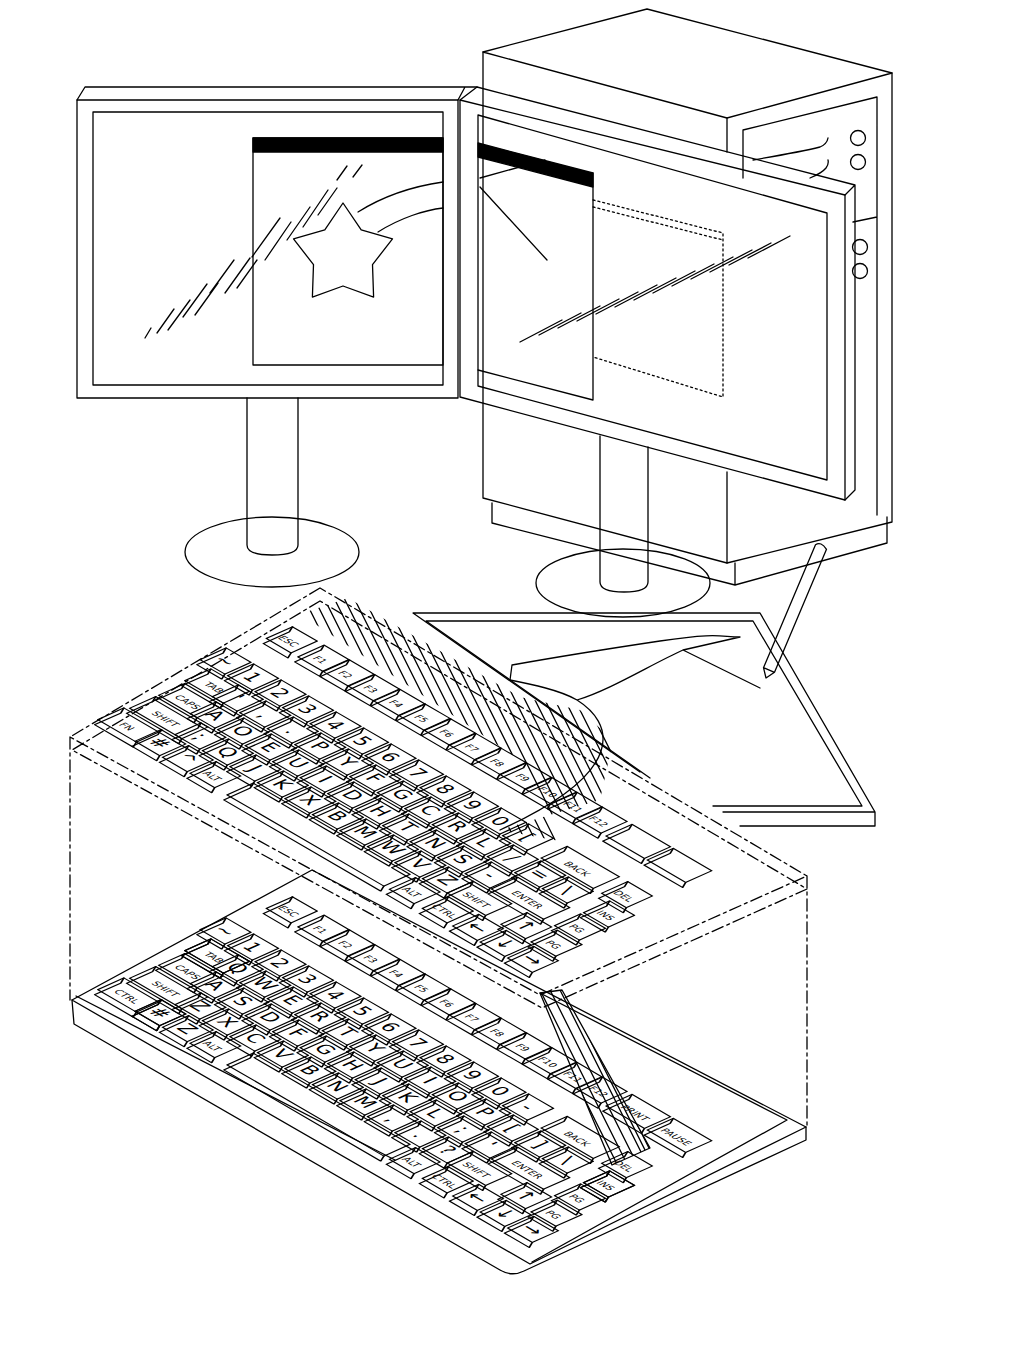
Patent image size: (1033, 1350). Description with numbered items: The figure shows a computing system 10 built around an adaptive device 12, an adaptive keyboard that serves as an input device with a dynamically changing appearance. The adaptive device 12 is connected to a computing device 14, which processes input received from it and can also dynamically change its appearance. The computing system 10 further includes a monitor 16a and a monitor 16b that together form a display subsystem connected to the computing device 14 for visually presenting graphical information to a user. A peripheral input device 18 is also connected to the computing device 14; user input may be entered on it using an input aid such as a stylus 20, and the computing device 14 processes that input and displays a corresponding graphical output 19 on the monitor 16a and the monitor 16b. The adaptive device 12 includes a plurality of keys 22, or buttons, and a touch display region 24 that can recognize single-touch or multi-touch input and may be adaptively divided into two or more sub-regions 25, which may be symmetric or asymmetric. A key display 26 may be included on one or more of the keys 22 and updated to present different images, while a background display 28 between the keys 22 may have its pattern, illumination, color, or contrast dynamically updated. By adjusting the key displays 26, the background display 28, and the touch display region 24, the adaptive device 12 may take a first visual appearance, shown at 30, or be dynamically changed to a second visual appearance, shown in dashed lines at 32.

The computing system 10 is at (130, 28).
The adaptive device 12 is at (439, 1072).
The computing device 14 is at (760, 55).
The monitor 16a is at (277, 317).
The monitor 16b is at (536, 421).
The peripheral input device 18 is at (813, 717).
The graphical output 19 is at (280, 320).
The stylus 20 is at (805, 592).
The keys 22 is at (165, 1023).
The touch display region 24 is at (688, 1093).
The sub-regions 25 is at (647, 1093).
The key display 26 is at (200, 942).
The background display 28 is at (636, 1183).
The first visual appearance 30 is at (118, 928).
The second visual appearance 32 is at (147, 650).